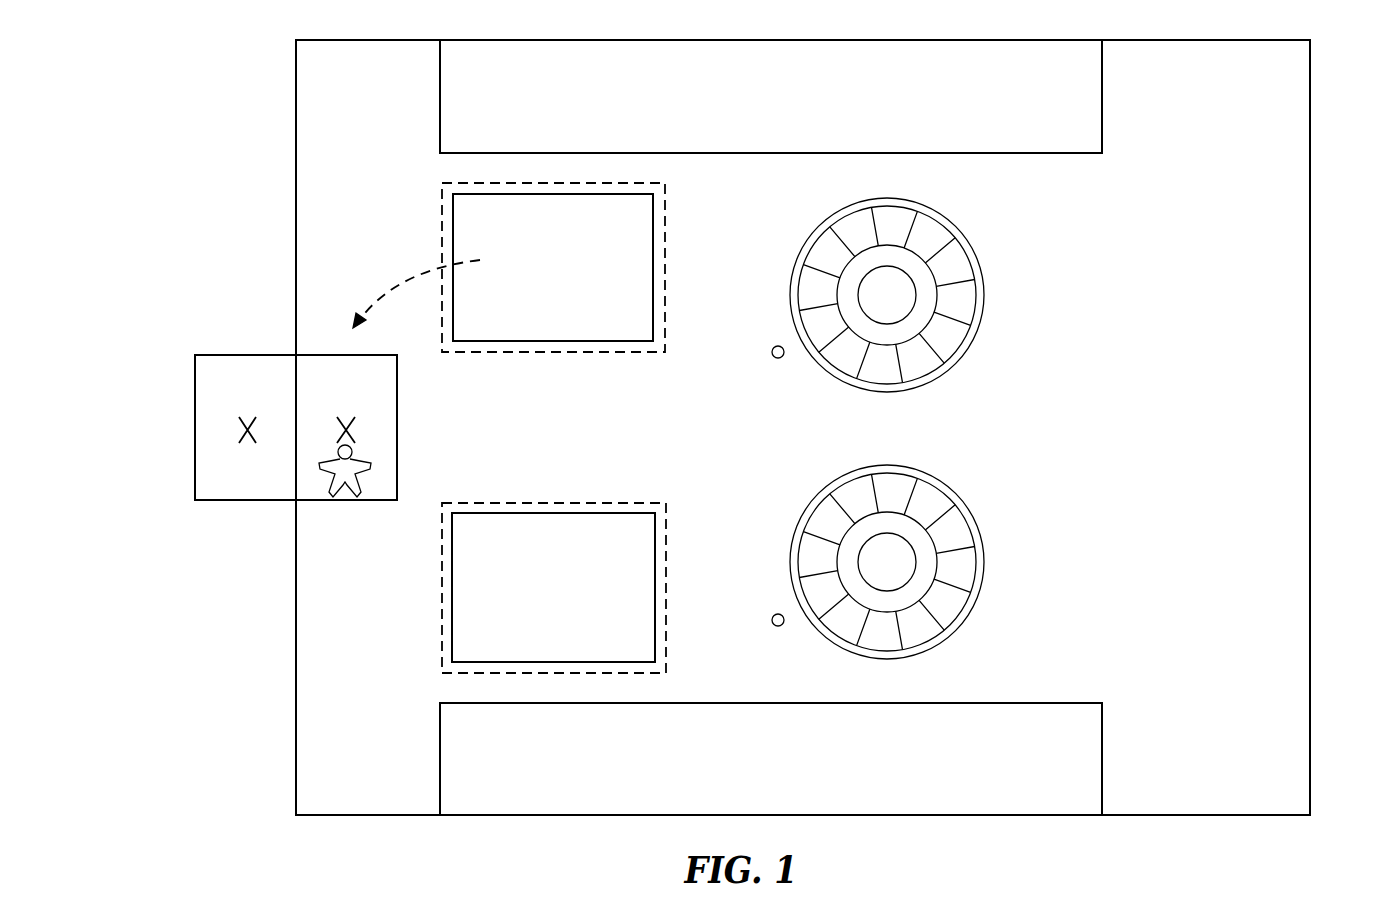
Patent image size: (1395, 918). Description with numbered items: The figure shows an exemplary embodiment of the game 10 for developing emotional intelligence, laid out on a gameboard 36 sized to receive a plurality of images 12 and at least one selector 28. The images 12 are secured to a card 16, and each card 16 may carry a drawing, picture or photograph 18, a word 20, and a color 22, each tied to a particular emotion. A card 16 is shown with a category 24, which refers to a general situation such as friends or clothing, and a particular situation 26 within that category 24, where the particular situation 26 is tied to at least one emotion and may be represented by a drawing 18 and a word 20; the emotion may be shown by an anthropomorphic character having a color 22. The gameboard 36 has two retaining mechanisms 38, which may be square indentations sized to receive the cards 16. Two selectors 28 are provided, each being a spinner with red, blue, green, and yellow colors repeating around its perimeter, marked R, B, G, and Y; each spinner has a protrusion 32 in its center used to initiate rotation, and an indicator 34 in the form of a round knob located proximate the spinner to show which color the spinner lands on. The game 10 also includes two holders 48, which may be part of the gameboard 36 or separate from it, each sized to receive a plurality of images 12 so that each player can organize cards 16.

The game 10 is at (1330, 143).
The images 12 is at (672, 238).
The card 16 is at (608, 295).
The drawing, picture, design and/or photograph 18 is at (237, 432).
The word 20 is at (222, 395).
The color 22 is at (347, 478).
The category 24 is at (231, 362).
The particular situation 26 is at (378, 370).
The selector 28 is at (959, 230).
The protrusion 32 is at (875, 308).
The indicator 34 is at (776, 358).
The gameboard 36 is at (1312, 580).
The retaining mechanism 38 is at (667, 195).
The holder 48 is at (1022, 110).